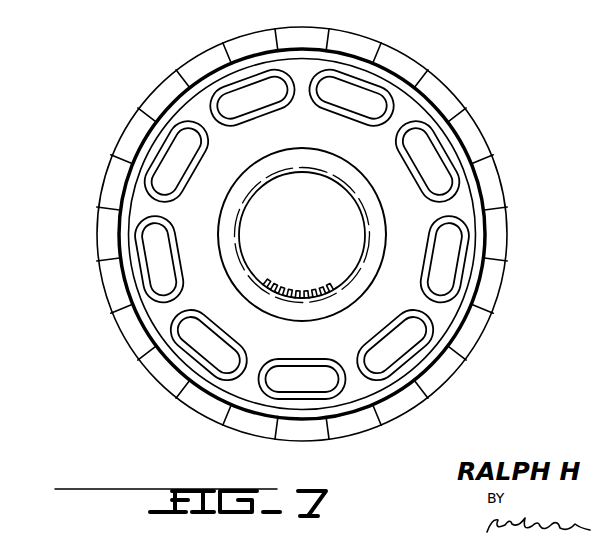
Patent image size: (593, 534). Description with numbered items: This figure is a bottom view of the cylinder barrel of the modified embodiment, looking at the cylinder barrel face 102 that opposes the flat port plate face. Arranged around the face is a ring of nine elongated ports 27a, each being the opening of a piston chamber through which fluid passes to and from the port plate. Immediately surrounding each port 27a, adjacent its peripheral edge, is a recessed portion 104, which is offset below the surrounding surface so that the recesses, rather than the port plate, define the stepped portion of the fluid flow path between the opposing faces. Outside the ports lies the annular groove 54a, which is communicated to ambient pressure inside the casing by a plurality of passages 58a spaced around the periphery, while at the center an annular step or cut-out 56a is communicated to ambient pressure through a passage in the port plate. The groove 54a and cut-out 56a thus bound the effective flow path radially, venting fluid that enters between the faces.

The cylinder barrel face 102 is at (495, 300).
The passages 58a is at (318, 8).
The annular groove 54a is at (477, 185).
The ports 27a is at (358, 95).
The recessed portions 104 is at (258, 115).
The annular step or cut-out 56a is at (372, 303).